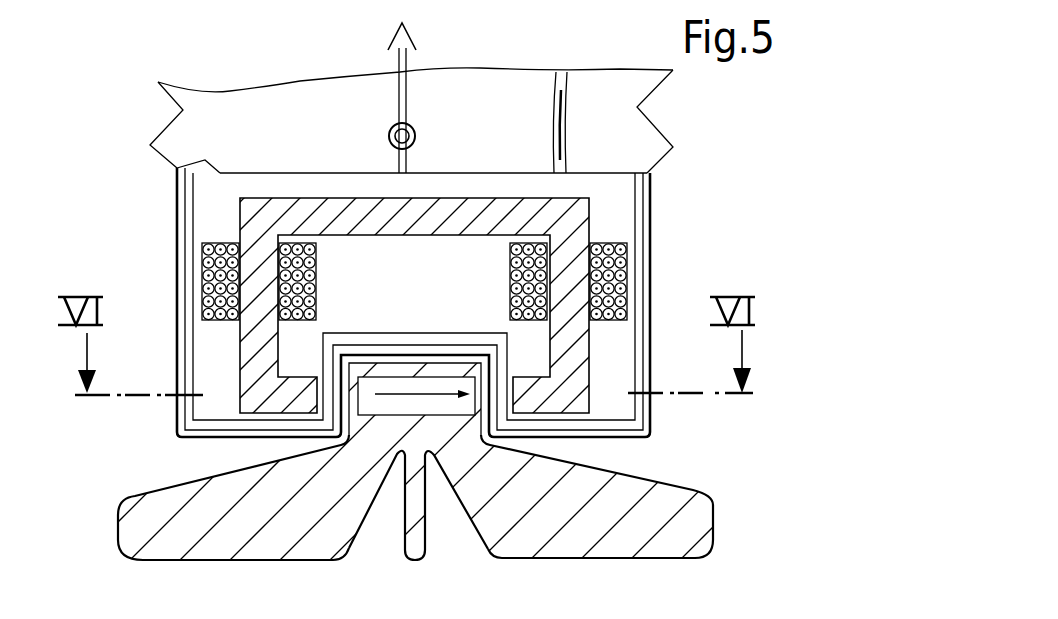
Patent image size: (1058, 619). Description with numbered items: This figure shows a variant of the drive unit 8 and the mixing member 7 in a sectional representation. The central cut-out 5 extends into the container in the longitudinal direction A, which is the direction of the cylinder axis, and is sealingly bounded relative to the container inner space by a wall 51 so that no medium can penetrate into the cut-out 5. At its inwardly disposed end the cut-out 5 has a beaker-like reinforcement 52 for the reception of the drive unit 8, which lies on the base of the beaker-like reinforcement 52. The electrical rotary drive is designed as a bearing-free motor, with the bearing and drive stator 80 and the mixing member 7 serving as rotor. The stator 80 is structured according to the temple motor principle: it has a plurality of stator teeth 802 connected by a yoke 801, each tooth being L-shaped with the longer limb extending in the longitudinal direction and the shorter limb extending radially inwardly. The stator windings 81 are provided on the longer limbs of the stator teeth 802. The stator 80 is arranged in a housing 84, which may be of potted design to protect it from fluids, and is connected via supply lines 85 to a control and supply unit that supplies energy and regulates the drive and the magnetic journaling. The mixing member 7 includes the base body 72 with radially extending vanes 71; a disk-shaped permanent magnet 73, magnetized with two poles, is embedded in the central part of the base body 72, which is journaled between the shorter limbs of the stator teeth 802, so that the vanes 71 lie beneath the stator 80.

The cut-out 5 is at (303, 138).
The wall 51 is at (150, 145).
The beaker-like reinforcement 52 is at (177, 423).
The mixing member 7 is at (510, 471).
The vane 71 is at (225, 546).
The base body 72 is at (363, 439).
The permanent magnet 73 is at (382, 404).
The drive unit 8 is at (620, 163).
The stator 80 is at (417, 269).
The yoke 801 is at (470, 212).
The stator teeth 802 is at (257, 343).
The stator windings 81 is at (202, 273).
The housing 84 is at (177, 169).
The supply lines 85 is at (568, 112).
The longitudinal direction A is at (407, 63).